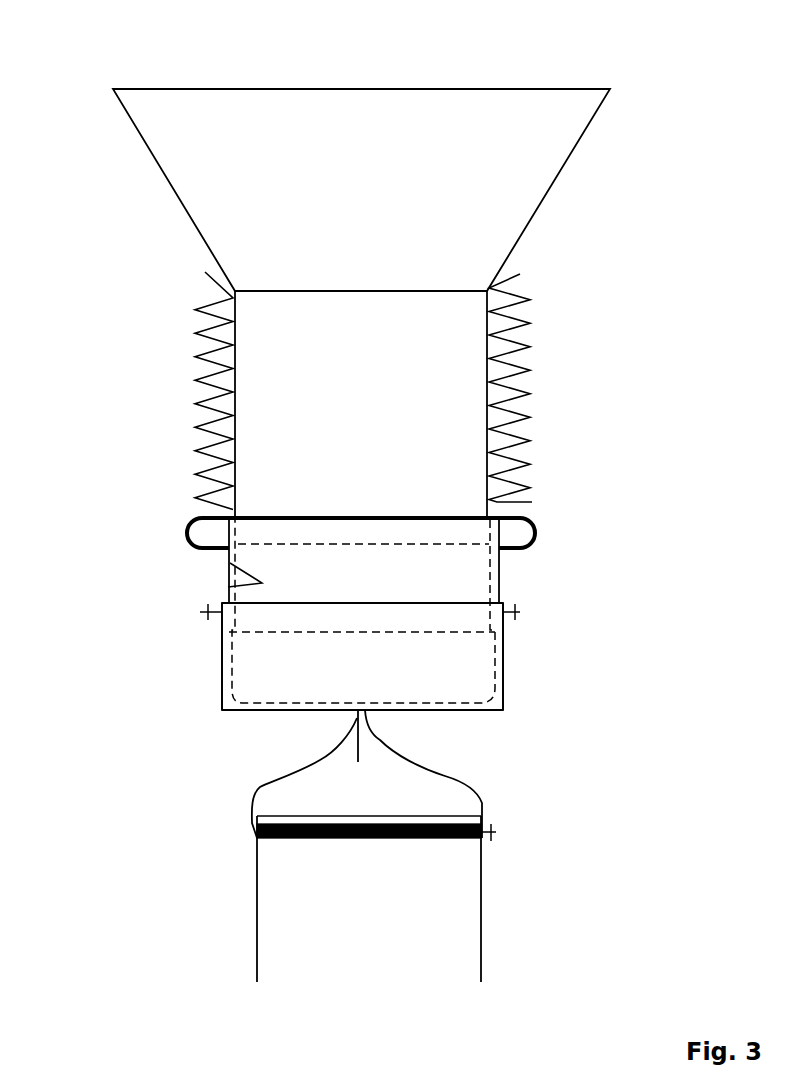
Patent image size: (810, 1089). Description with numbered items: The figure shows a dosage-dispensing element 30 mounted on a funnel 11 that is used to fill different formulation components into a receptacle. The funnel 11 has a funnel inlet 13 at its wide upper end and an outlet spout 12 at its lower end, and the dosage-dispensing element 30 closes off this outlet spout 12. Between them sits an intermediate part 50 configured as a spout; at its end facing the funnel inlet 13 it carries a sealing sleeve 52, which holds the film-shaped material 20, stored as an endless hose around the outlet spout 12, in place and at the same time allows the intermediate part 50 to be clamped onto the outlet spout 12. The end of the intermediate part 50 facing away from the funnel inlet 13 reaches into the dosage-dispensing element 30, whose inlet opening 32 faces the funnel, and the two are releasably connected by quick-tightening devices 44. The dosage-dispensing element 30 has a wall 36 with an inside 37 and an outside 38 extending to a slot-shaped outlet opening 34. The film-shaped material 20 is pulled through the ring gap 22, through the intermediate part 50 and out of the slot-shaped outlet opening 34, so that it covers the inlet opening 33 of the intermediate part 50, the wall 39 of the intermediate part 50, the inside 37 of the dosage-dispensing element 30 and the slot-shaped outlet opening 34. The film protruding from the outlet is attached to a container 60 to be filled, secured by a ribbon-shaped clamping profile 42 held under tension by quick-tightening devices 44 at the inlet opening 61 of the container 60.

The funnel 11 is at (588, 125).
The funnel inlet 13 is at (360, 88).
The outlet spout 12 is at (222, 293).
The film-shaped material 20 is at (530, 370).
The ring gap 22 is at (232, 506).
The sealing sleeve 52 is at (533, 532).
The intermediate part 50 is at (500, 578).
The inlet opening 33 is at (373, 518).
The inlet opening 32 is at (373, 603).
The wall 39 is at (228, 586).
The dosage-dispensing element 30 is at (221, 646).
The inside of the wall 37 is at (226, 712).
The outside of the wall 38 is at (507, 690).
The wall 36 is at (507, 712).
The quick-tightening device 44 is at (200, 612).
The slot-shaped outlet opening 34 is at (358, 762).
The inlet opening of the container 61 is at (372, 817).
The clamping profile 42 is at (253, 838).
The container 60 is at (258, 928).